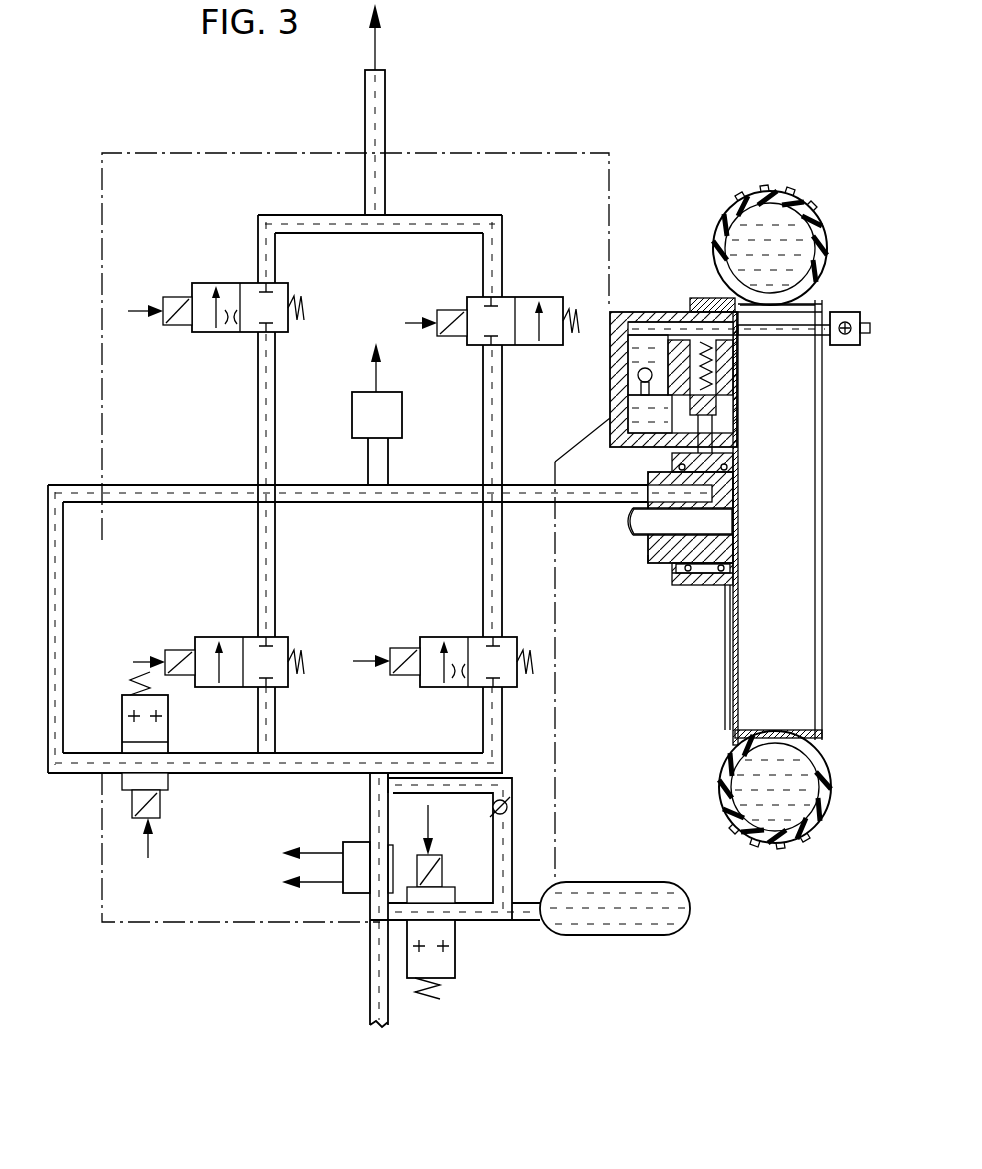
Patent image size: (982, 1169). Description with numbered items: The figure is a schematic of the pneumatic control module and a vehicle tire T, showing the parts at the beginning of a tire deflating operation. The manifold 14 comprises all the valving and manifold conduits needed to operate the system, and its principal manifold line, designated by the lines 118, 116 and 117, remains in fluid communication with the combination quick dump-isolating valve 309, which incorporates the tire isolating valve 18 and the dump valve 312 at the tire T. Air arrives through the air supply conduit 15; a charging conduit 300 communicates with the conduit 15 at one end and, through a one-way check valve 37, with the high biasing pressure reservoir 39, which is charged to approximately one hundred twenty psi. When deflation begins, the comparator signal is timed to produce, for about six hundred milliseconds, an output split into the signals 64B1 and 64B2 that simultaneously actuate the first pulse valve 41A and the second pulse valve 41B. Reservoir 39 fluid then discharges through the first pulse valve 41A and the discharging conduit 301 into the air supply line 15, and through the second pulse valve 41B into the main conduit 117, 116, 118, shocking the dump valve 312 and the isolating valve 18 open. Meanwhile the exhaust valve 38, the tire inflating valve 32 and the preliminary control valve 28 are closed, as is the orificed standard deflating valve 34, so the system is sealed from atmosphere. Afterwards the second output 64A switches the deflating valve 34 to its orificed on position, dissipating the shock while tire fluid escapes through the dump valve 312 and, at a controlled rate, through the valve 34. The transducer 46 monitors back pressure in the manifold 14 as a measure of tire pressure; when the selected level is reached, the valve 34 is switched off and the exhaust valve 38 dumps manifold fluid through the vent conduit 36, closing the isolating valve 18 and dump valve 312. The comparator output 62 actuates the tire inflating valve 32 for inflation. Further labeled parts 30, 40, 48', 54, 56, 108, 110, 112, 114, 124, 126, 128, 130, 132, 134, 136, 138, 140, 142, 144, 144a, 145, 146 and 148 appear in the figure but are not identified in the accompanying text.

The manifold 14 is at (505, 153).
The air supply conduit 15 is at (385, 805).
The tire isolating valve 18 is at (673, 308).
The preliminary control valve 28 is at (466, 637).
The conduit 30 is at (555, 502).
The tire inflating valve 32 is at (241, 637).
The standard deflating valve 34 is at (192, 296).
The vent conduit 36 is at (386, 102).
The one-way check valve 37 is at (505, 800).
The exhaust valve 38 is at (513, 297).
The high biasing pressure reservoir 39 is at (628, 936).
The pressure switch 40 is at (343, 842).
The first pulse valve 41A is at (456, 948).
The second pulse valve 41B is at (122, 732).
The transducer 46 is at (351, 418).
The transducer output 48' is at (358, 366).
The solenoid input 54 is at (347, 661).
The solenoid input 56 is at (395, 322).
The comparator output 62 is at (133, 662).
The second output 64A is at (125, 312).
The first output branch 64B1 is at (148, 860).
The second output branch 64B2 is at (428, 818).
The pressure switch output 108 is at (312, 881).
The pressure switch output 110 is at (312, 852).
The manifold passage 112 is at (302, 752).
The manifold passage 114 is at (428, 752).
The principal manifold line 116 is at (343, 503).
The principal manifold line 117 is at (160, 484).
The principal manifold line 118 is at (522, 484).
The rotary seal assembly 124 is at (652, 590).
The wheel rim 126 is at (735, 676).
The air tube 128 is at (720, 586).
The hub 130 is at (652, 556).
The axle shaft 132 is at (705, 533).
The hub passage 134 is at (710, 493).
The seal housing 136 is at (712, 562).
The seal 138 is at (690, 580).
The seal 140 is at (727, 572).
The seal 142 is at (610, 394).
The passage 144 is at (748, 337).
The passage branch 144a is at (810, 338).
The valve stem fitting 145 is at (848, 347).
The valve piston 146 is at (705, 402).
The check ball 148 is at (645, 368).
The charging conduit 300 is at (512, 850).
The discharging conduit 301 is at (392, 1000).
The combination quick dump-isolating valve 309 is at (660, 252).
The dump valve 312 is at (706, 300).
The tire T is at (765, 192).